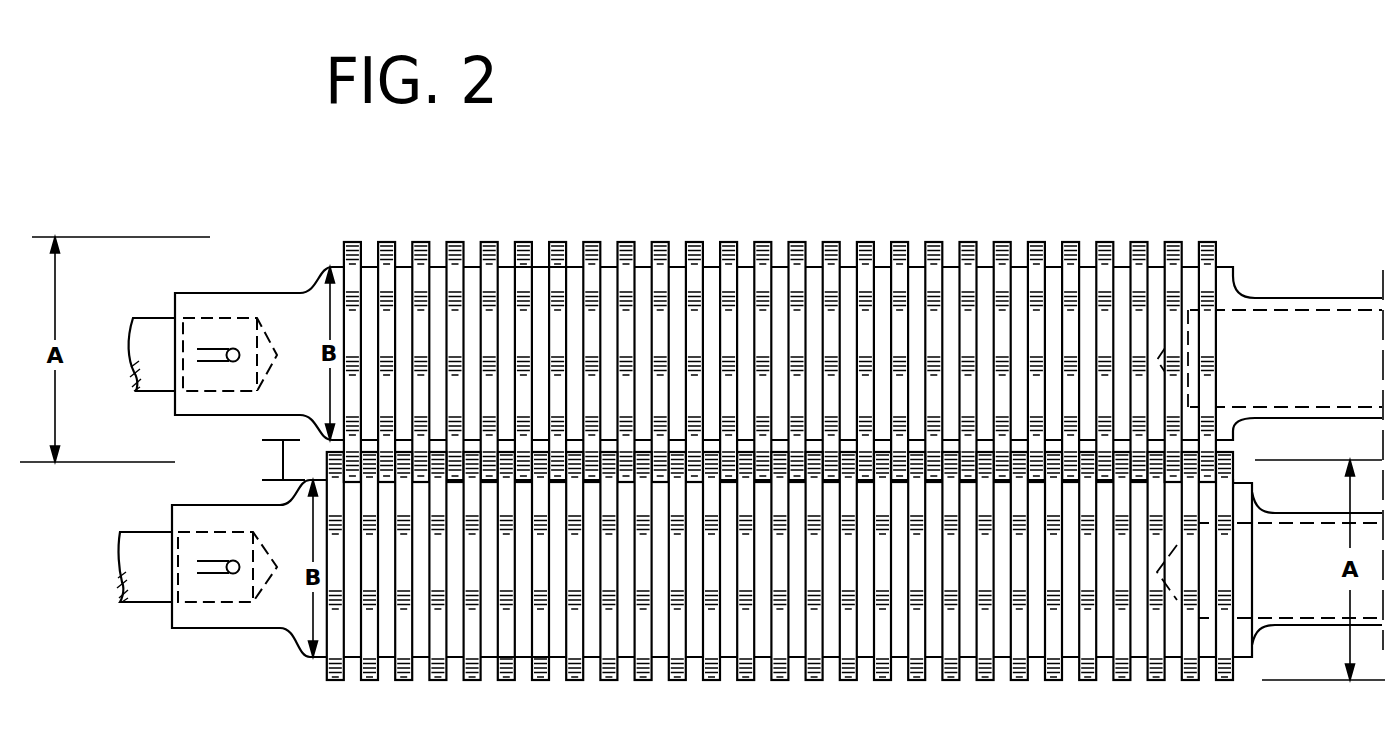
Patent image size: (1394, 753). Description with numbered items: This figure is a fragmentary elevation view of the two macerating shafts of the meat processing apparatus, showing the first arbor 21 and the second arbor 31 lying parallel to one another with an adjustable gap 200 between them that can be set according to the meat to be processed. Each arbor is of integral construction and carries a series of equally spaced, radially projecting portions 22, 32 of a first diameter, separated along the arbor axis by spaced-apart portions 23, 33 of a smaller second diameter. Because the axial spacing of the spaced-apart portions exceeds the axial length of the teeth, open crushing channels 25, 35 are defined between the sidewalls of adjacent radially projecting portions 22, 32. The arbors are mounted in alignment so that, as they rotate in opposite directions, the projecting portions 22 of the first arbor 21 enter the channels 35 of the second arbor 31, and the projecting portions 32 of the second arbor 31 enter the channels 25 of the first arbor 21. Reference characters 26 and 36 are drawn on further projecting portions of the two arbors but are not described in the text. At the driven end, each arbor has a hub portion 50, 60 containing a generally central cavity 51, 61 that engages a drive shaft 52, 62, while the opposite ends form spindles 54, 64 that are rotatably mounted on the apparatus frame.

The arbor 21 is at (285, 281).
The radially projecting portions 22 is at (421, 242).
The spaced-apart portions 23 is at (573, 267).
The crushing channels 25 is at (1210, 445).
The rings of first roller 26 is at (694, 242).
The arbor 31 is at (257, 614).
The radially projecting portions 32 is at (438, 680).
The spaced-apart portions 33 is at (557, 657).
The crushing channels 35 is at (1230, 500).
The rings of second roller 36 is at (677, 680).
The hub portion 50 is at (260, 307).
The central cavity 51 is at (208, 322).
The drive shaft 52 is at (153, 330).
The spindle 54 is at (1342, 326).
The hub portion 60 is at (276, 534).
The central cavity 61 is at (208, 546).
The drive shaft 62 is at (135, 568).
The spindle 64 is at (1322, 572).
The gap 200 is at (282, 463).